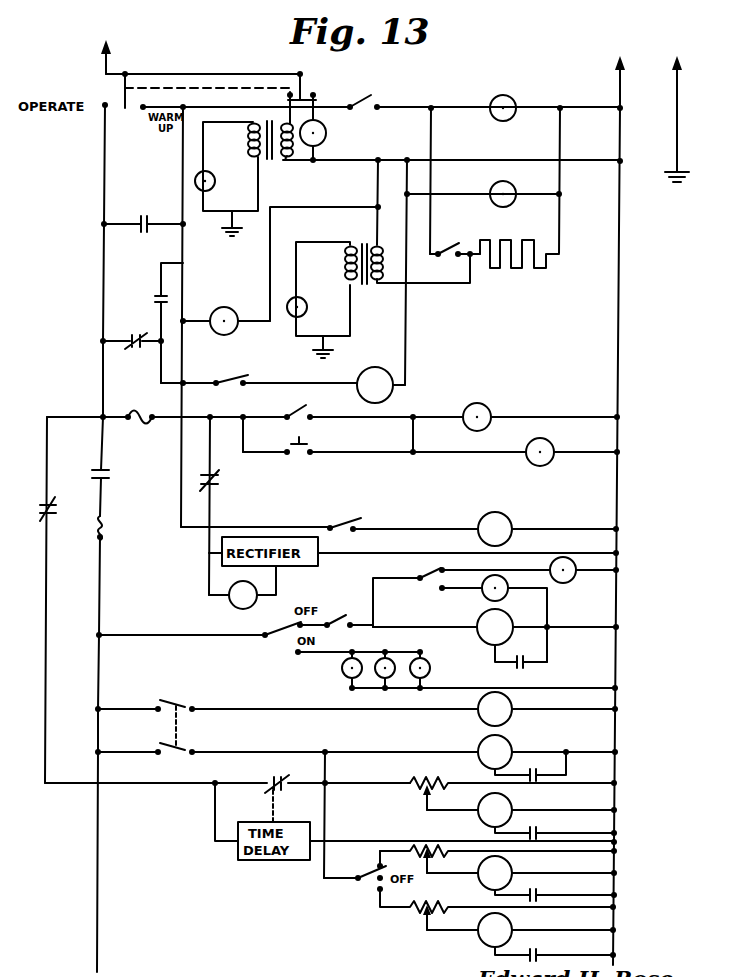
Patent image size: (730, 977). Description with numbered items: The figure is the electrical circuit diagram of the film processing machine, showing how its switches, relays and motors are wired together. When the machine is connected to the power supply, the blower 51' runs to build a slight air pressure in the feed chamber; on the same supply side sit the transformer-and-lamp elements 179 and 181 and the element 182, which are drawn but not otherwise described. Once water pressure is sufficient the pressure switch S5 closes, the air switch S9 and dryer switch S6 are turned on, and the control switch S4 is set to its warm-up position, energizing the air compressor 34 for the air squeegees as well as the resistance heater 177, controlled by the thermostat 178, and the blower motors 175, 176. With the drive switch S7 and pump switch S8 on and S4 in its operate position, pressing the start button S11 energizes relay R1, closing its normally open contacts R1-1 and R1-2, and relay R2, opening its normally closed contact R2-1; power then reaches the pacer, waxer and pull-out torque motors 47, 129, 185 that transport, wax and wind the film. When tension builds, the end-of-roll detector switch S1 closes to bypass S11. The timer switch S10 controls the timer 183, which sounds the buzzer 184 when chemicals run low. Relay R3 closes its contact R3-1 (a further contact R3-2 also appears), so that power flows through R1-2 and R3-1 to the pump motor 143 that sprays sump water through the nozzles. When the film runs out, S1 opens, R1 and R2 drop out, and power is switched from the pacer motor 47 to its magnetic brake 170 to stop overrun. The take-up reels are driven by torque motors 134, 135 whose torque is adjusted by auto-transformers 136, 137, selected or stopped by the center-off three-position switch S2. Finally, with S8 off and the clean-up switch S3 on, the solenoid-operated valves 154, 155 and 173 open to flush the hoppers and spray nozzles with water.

The blower 51' is at (336, 133).
The blower motor 175 is at (512, 98).
The blower motor 176 is at (512, 184).
The resistance heater 177 is at (518, 270).
The thermostat 178 is at (460, 236).
The transformer lamp 179 is at (215, 183).
The transformer lamp 181 is at (307, 309).
The pump motor 143 is at (379, 358).
The air compressor 34 is at (505, 516).
The buzzer 184 is at (562, 583).
The timer 183 is at (485, 598).
The motor 182 is at (505, 612).
The solenoid-operated valve 154 is at (342, 670).
The solenoid-operated valve 155 is at (390, 661).
The solenoid-operated valve 173 is at (428, 668).
The pacer motor 47 is at (507, 697).
The waxer motor 129 is at (507, 740).
The pull-out torque motor 185 is at (507, 798).
The auto-transformer 136 is at (432, 848).
The torque motor 134 is at (512, 873).
The auto-transformer 137 is at (418, 917).
The torque motor 135 is at (507, 918).
The magnetic brake 170 is at (233, 603).
The end-of-roll detector switch S1 is at (297, 408).
The three-position switch S2 is at (368, 882).
The clean-up switch S3 is at (286, 636).
The control switch S4 is at (125, 86).
The pressure switch S5 is at (232, 380).
The dryer switch S6 is at (365, 94).
The drive switch S7 is at (178, 700).
The pump switch S8 is at (336, 612).
The air switch S9 is at (344, 516).
The timer switch S10 is at (409, 597).
The start button S11 is at (303, 447).
The relay R1 is at (472, 405).
The relay R2 is at (538, 438).
The relay R3 is at (230, 300).
The normally open contact R1-1 is at (117, 476).
The normally open contact R1-2 is at (143, 215).
The normally closed contact R2-1 is at (226, 481).
The normally open contact R3-1 is at (150, 323).
The relay contact R3-2 is at (132, 350).